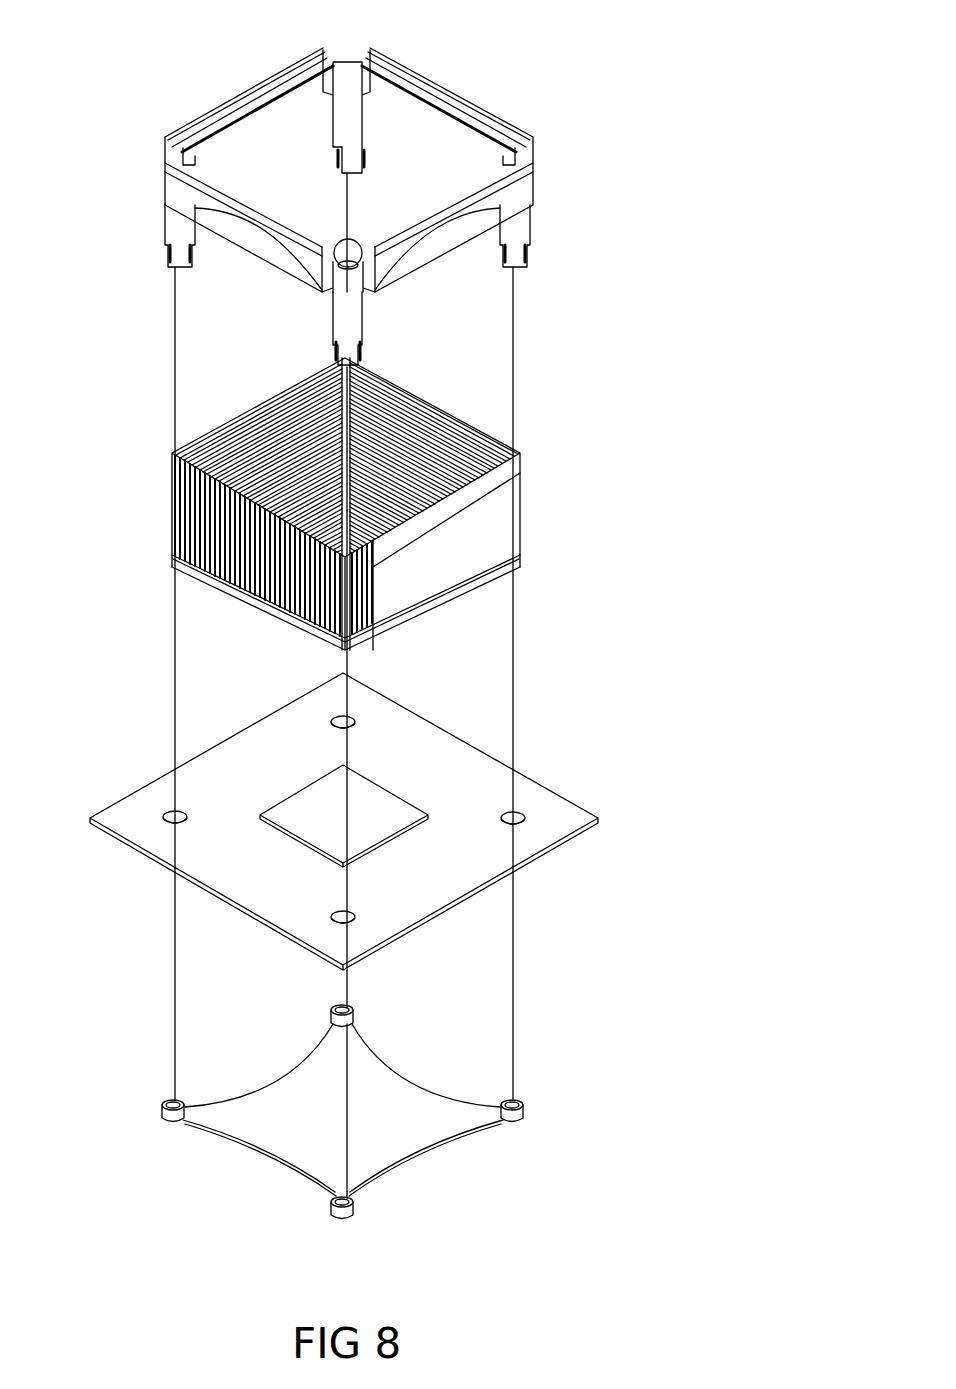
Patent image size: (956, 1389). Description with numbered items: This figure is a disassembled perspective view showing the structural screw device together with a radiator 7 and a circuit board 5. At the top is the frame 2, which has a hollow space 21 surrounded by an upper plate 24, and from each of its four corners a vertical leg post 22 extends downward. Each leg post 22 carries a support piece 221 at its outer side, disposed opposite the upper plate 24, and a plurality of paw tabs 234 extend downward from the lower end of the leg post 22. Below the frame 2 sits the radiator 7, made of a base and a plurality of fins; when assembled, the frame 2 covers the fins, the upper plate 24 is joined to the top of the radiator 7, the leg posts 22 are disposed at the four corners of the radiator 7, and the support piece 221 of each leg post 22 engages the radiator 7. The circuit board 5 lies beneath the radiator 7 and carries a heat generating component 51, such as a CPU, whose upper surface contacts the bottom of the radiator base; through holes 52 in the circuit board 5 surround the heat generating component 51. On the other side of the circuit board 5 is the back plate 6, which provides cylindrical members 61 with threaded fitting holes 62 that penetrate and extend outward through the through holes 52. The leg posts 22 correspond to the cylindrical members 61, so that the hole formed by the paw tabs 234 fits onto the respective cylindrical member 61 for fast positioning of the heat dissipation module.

The frame 2 is at (447, 76).
The hollow space 21 is at (293, 165).
The leg post 22 is at (518, 232).
The support piece 221 is at (507, 252).
The upper plate 24 is at (475, 113).
The paw tabs 234 is at (183, 266).
The circuit board 5 is at (462, 773).
The heat generating component 51 is at (352, 807).
The through holes 52 is at (513, 808).
The back plate 6 is at (347, 1123).
The cylindrical members 61 is at (520, 1117).
The threaded fitting holes 62 is at (513, 1092).
The radiator 7 is at (485, 543).